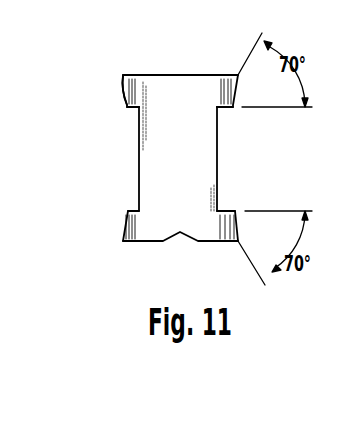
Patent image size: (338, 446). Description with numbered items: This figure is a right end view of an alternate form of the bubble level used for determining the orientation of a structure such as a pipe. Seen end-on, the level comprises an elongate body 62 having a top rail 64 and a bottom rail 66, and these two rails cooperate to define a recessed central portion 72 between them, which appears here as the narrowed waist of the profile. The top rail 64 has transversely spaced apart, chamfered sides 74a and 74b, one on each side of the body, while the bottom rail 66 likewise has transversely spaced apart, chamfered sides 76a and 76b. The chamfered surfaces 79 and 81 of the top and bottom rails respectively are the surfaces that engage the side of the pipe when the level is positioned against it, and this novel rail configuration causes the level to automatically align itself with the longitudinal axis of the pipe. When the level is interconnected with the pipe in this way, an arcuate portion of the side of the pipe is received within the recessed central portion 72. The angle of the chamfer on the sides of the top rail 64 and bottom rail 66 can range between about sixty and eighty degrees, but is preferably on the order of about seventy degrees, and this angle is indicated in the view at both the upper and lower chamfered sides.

The elongate body 62 is at (127, 74).
The top rail 64 is at (202, 80).
The bottom rail 66 is at (150, 243).
The recessed central portion 72 is at (218, 156).
The chamfered side 74a is at (123, 90).
The chamfered side 74b is at (238, 79).
The chamfered side 76a is at (123, 228).
The chamfered side 76b is at (238, 236).
The chamfered surface 79 is at (124, 107).
The chamfered surface 81 is at (130, 211).